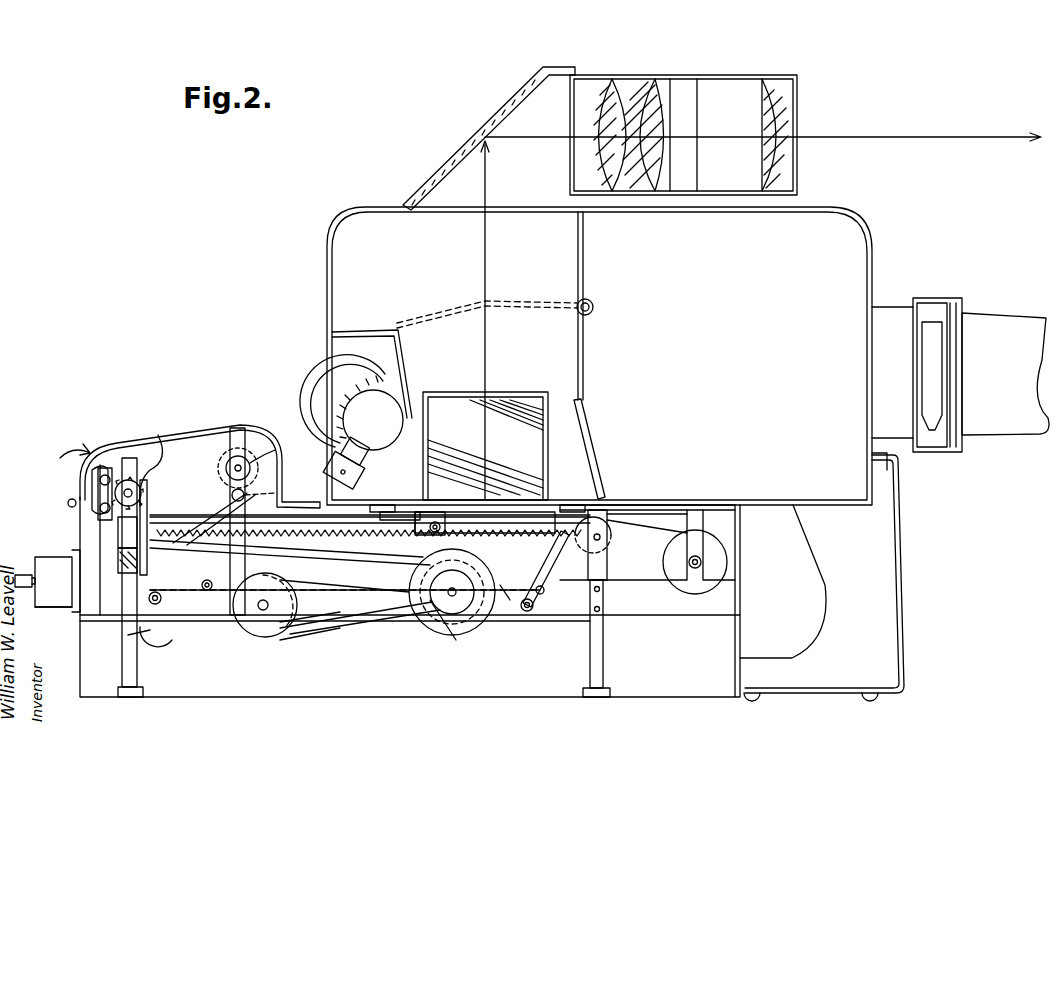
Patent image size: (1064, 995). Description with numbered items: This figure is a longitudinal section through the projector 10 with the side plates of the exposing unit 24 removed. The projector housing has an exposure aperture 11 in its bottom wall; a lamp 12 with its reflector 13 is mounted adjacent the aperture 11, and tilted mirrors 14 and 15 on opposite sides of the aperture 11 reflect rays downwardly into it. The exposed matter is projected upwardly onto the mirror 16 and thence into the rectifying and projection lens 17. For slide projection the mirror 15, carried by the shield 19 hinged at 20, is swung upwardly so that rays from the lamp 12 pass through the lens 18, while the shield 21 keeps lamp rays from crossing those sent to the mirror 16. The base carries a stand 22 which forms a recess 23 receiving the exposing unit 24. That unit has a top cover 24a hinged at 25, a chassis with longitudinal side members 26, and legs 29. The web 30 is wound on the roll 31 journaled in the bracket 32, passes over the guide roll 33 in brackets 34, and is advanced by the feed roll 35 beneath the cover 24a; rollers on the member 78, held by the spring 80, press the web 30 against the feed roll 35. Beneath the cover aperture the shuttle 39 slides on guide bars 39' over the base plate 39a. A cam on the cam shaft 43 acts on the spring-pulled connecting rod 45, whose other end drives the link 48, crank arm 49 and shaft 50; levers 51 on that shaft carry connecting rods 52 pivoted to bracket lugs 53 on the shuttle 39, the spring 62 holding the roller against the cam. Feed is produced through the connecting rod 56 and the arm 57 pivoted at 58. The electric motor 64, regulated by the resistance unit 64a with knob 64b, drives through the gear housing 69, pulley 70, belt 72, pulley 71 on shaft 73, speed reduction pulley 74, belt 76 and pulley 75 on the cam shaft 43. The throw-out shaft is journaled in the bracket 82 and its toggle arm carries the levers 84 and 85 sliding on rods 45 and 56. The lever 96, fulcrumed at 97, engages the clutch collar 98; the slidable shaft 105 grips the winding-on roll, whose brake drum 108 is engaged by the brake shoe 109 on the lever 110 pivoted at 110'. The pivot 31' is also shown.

The projector 10 is at (395, 206).
The exposure aperture 11 is at (496, 494).
The lamp 12 is at (363, 439).
The reflector 13 is at (373, 378).
The mirror 14 is at (500, 400).
The mirror 15 is at (584, 450).
The mirror 16 is at (502, 118).
The rectifying and projection lens 17 is at (645, 85).
The lens 18 is at (986, 320).
The shield 19 is at (585, 360).
The hinge 20 is at (596, 309).
The shield 21 is at (406, 349).
The stand 22 is at (900, 601).
The recess 23 is at (752, 505).
The exposing unit 24 is at (280, 697).
The top wall or cover 24a is at (246, 414).
The hinge 25 is at (68, 503).
The longitudinal side member 26 is at (648, 617).
The legs 29 is at (122, 661).
The web 30 is at (640, 512).
The roll 31 is at (714, 562).
The pivot 31' is at (729, 571).
The bracket 32 is at (703, 525).
The guide roll 33 is at (612, 540).
The brackets 34 is at (607, 565).
The feed roll 35 is at (158, 436).
The shutter-carriage or shuttle 39 is at (370, 495).
The base plate 39a is at (383, 500).
The guide bars 39' is at (573, 494).
The cam shaft 43 is at (300, 635).
The connecting rod 45 is at (370, 562).
The link 48 is at (510, 602).
The crank arm 49 is at (545, 600).
The shaft 50 is at (528, 612).
The levers 51 is at (548, 571).
The connecting rods 52 is at (500, 531).
The bracket lugs 53 is at (395, 507).
The connecting rod 56 is at (204, 590).
The arm 57 is at (158, 527).
The pivot 58 is at (148, 598).
The spring 62 is at (470, 564).
The electric motor 64 is at (234, 632).
The resistance unit 64a is at (57, 581).
The knob 64b is at (24, 575).
The gear housing 69 is at (128, 635).
The pulley 70 is at (160, 640).
The pulley 71 is at (445, 628).
The belt 72 is at (380, 630).
The shaft 73 is at (453, 597).
The speed reduction pulley 74 is at (472, 582).
The pulley 75 is at (262, 640).
The belt 76 is at (410, 630).
The member 78 is at (90, 482).
The spring 80 is at (118, 566).
The bracket 82 is at (262, 442).
The lever 84 is at (336, 636).
The lever 85 is at (198, 560).
The lever 96 is at (141, 500).
The fulcrum 97 is at (125, 540).
The clutch collar 98 is at (108, 520).
The slidable shaft 105 is at (258, 466).
The brake drum 108 is at (226, 468).
The brake shoe 109 is at (262, 480).
The lever 110 is at (214, 518).
The pivot 110' is at (280, 482).